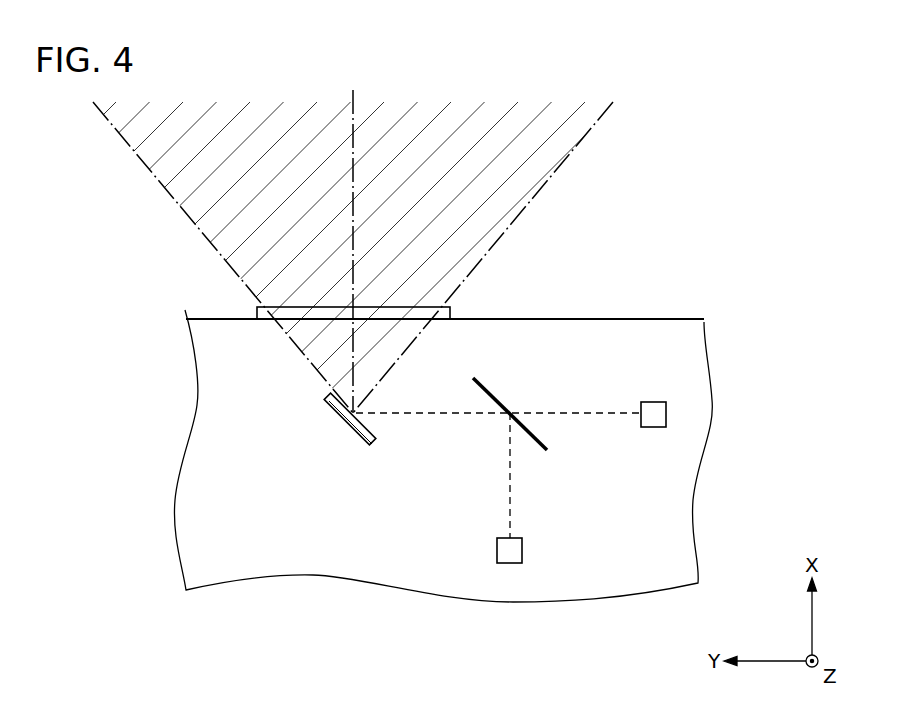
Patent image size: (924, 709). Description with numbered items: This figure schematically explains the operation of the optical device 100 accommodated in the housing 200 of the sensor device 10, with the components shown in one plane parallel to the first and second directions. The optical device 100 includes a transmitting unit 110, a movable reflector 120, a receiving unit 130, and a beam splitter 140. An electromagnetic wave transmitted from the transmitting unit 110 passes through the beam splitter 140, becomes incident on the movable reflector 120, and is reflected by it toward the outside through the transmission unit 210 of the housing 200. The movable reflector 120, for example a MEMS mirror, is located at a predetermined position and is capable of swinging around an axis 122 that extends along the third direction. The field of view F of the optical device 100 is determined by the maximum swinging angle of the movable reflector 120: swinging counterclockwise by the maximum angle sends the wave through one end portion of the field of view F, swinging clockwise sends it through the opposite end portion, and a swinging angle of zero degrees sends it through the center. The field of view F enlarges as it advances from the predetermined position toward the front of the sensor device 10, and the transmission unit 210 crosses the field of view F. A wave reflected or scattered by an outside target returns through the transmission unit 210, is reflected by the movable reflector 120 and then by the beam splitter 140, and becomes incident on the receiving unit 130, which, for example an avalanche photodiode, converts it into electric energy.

The sensor device 10 is at (735, 109).
The optical device 100 is at (224, 334).
The transmitting unit 110 is at (653, 402).
The movable reflector 120 is at (330, 404).
The axis 122 is at (348, 425).
The receiving unit 130 is at (522, 550).
The beam splitter 140 is at (492, 390).
The housing 200 is at (579, 300).
The transmission unit 210 is at (450, 312).
The field of view F is at (558, 168).